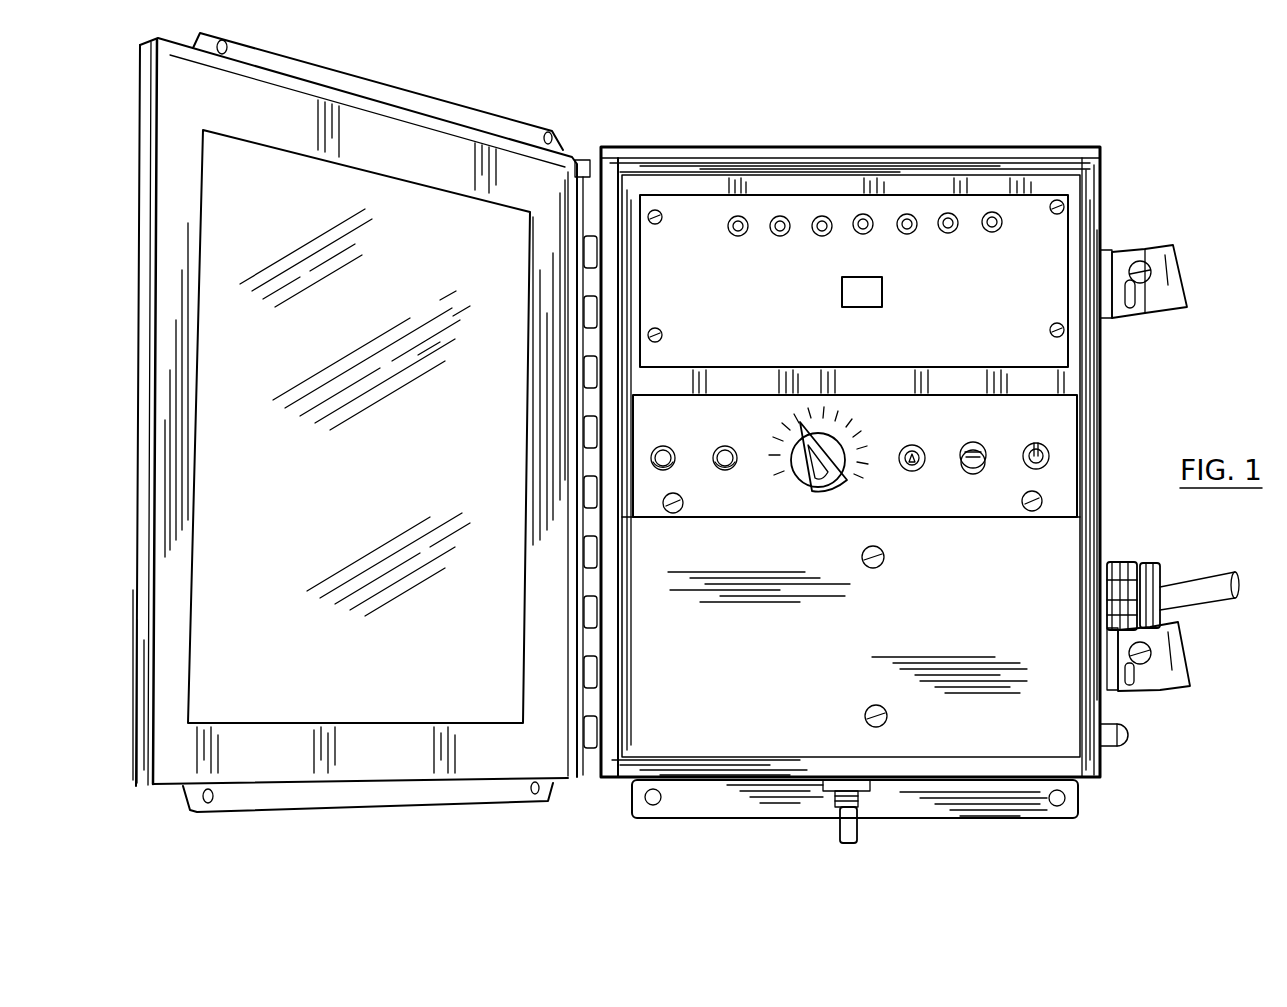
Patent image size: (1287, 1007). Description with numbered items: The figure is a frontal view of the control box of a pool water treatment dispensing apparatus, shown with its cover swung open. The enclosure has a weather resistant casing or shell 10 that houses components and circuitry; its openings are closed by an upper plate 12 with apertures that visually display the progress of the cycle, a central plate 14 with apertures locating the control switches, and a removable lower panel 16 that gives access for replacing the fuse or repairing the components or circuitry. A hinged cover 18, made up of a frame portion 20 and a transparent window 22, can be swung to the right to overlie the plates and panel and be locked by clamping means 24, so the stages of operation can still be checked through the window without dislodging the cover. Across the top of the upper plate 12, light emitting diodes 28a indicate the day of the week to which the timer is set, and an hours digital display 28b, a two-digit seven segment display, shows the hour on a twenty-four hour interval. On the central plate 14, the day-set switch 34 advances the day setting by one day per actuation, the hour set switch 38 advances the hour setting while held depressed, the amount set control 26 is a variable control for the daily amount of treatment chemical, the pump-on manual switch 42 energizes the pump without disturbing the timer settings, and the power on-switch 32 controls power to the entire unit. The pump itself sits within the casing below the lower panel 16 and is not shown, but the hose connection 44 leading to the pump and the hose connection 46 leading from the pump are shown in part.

The casing 10 is at (1107, 181).
The upper plate 12 is at (952, 315).
The central plate 14 is at (1063, 443).
The lower panel 16 is at (1070, 570).
The hinged cover 18 is at (142, 202).
The frame portion 20 is at (183, 345).
The transparent window 22 is at (393, 497).
The clamping means 24 is at (1173, 242).
The amount set control 26 is at (813, 478).
The light emitting diodes 28a is at (820, 216).
The hours digital display 28b is at (842, 291).
The power on-switch 32 is at (1050, 457).
The day-set switch 34 is at (675, 450).
The hour set switch 38 is at (710, 468).
The pump-on manual switch 42 is at (963, 448).
The hose connection 44 is at (1200, 583).
The hose connection 46 is at (838, 835).